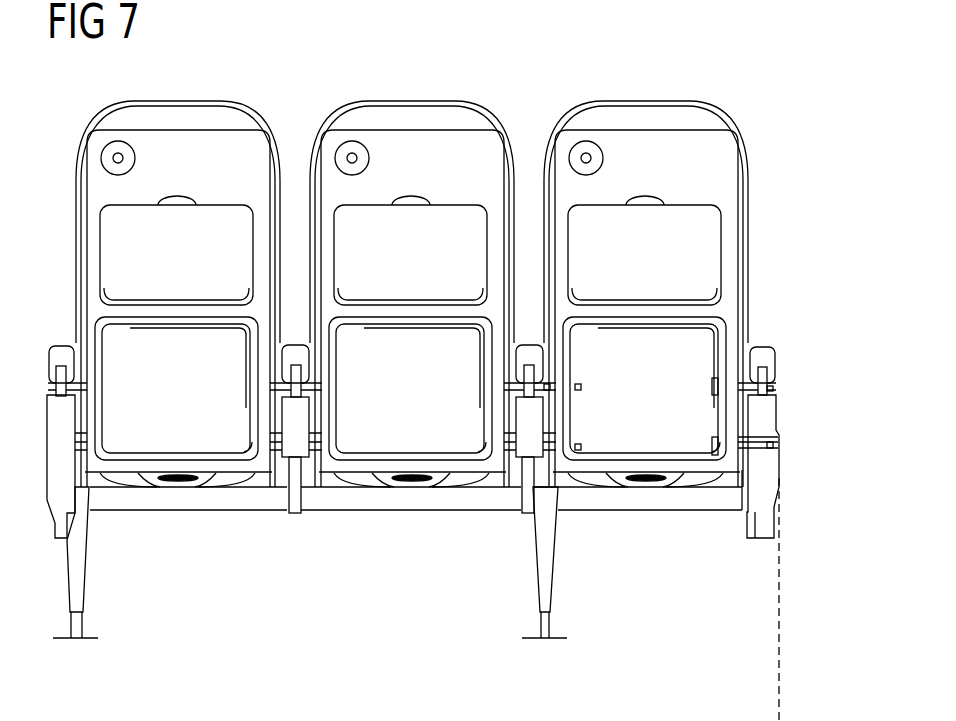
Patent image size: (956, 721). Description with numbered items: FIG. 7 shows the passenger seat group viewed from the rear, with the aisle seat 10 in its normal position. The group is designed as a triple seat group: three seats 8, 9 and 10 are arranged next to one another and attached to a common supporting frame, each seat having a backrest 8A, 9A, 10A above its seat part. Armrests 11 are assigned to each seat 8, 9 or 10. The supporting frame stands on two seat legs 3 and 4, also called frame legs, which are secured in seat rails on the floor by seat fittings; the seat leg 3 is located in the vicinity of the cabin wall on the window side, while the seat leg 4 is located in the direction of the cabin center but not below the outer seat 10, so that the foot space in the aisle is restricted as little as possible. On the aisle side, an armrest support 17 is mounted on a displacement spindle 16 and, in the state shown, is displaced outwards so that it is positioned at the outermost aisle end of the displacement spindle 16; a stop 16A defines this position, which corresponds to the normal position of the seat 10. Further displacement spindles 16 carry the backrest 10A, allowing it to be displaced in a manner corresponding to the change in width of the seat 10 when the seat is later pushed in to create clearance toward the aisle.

The seat 8 is at (178, 272).
The seat 9 is at (412, 272).
The aisle seat 10 is at (680, 272).
The backrest 8A is at (220, 222).
The backrest 9A is at (410, 230).
The backrest 10A is at (692, 250).
The armrest 11 is at (527, 357).
The displacement spindle 16 is at (547, 387).
The stop 16A is at (712, 383).
The armrest support 17 is at (765, 408).
The seat leg 3 is at (85, 573).
The seat leg 4 is at (548, 571).